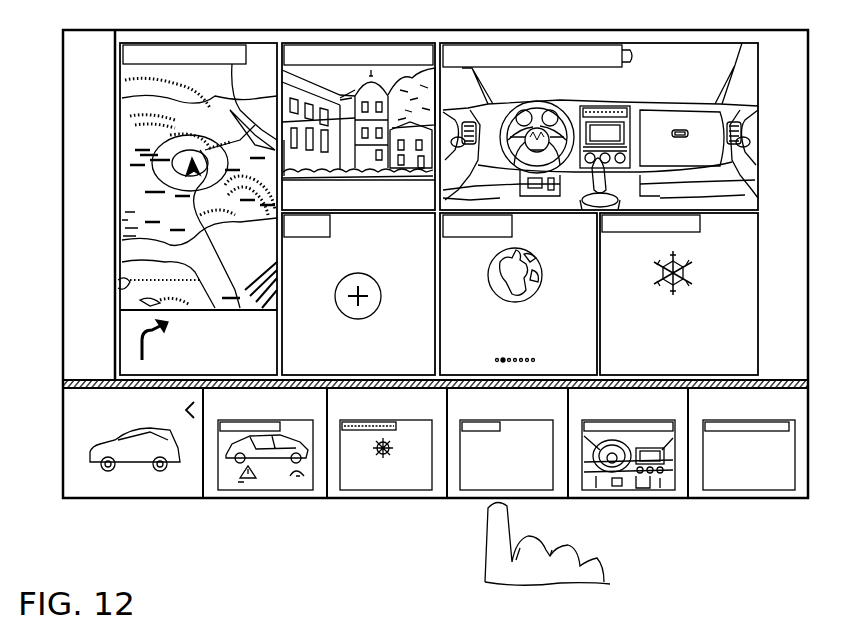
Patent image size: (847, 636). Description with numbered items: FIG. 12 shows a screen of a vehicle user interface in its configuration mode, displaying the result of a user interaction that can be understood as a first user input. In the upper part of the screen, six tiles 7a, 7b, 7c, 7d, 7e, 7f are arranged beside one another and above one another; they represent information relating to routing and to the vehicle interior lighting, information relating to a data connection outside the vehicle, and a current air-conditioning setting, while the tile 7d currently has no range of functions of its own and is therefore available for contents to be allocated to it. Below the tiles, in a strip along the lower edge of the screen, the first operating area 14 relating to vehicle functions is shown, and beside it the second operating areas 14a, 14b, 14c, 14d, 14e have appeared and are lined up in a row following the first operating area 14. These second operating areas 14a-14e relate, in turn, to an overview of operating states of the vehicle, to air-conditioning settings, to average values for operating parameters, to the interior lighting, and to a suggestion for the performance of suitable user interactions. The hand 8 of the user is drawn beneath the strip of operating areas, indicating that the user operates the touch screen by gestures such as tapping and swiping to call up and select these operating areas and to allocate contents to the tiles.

The tile 7a is at (260, 54).
The tile 7b is at (376, 43).
The tile 7c is at (658, 80).
The tile 7d is at (417, 368).
The tile 7e is at (583, 365).
The tile 7f is at (740, 368).
The hand 8 is at (547, 543).
The first operating area 14 is at (93, 481).
The second operating area 14a is at (211, 482).
The second operating area 14b is at (334, 482).
The second operating area 14c is at (453, 482).
The second operating area 14d is at (680, 482).
The second operating area 14e is at (800, 482).